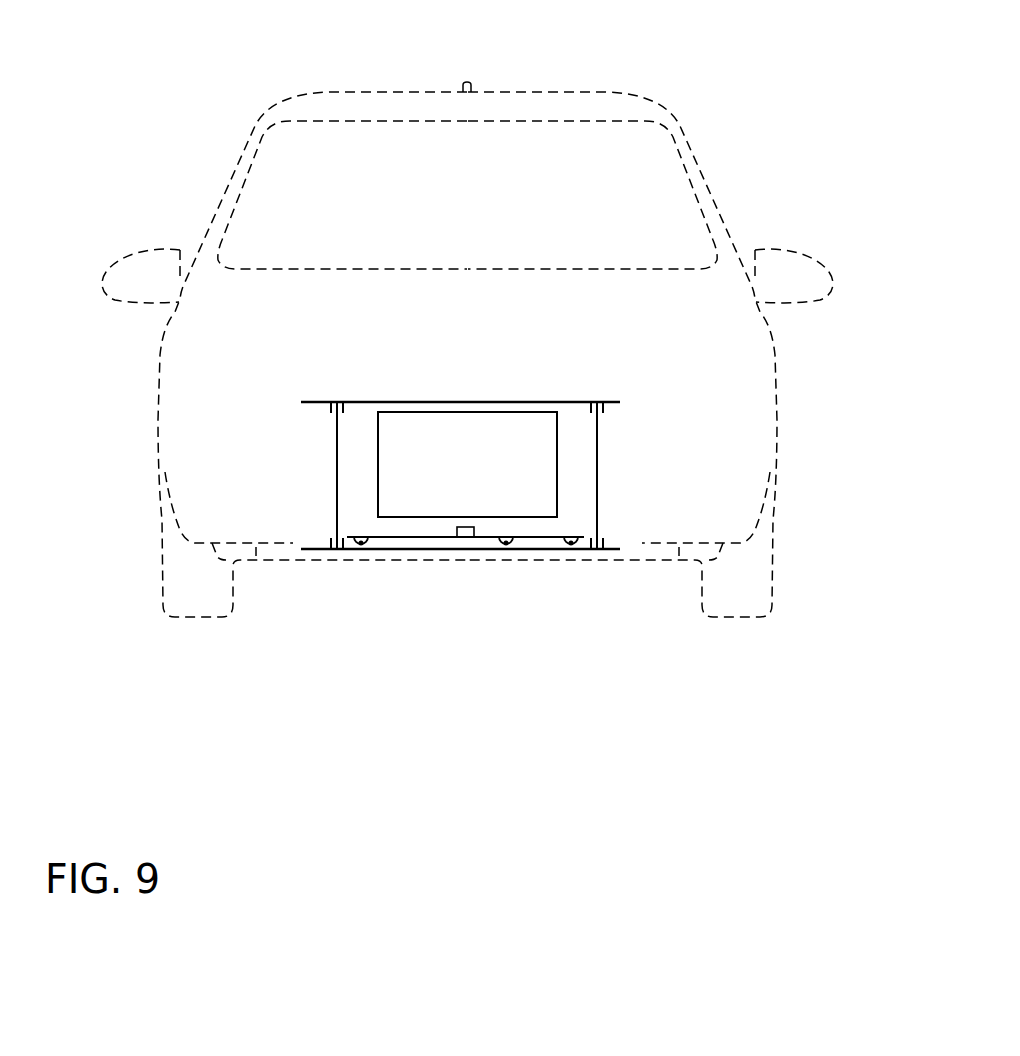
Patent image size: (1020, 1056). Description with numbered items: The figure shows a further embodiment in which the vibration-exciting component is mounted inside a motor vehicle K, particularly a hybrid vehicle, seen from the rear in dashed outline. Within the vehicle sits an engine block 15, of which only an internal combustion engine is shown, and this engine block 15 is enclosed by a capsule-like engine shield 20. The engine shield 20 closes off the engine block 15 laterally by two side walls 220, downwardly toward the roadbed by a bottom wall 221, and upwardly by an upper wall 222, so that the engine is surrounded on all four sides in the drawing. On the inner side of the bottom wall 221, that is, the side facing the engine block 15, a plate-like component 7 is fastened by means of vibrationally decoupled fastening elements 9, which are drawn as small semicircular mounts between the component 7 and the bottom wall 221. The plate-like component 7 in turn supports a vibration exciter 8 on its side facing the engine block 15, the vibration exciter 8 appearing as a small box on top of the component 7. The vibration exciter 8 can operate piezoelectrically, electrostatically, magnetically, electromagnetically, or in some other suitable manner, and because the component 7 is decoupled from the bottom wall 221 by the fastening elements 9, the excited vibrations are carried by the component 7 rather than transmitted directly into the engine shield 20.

The motor vehicle K is at (707, 105).
The engine shield 20 is at (478, 493).
The side walls 220 is at (337, 473).
The bottom wall 221 is at (582, 550).
The upper wall 222 is at (532, 402).
The engine block 15 is at (397, 487).
The plate-like component 7 is at (432, 537).
The vibration exciter 8 is at (466, 532).
The vibrationally decoupled fastening elements 9 is at (361, 545).